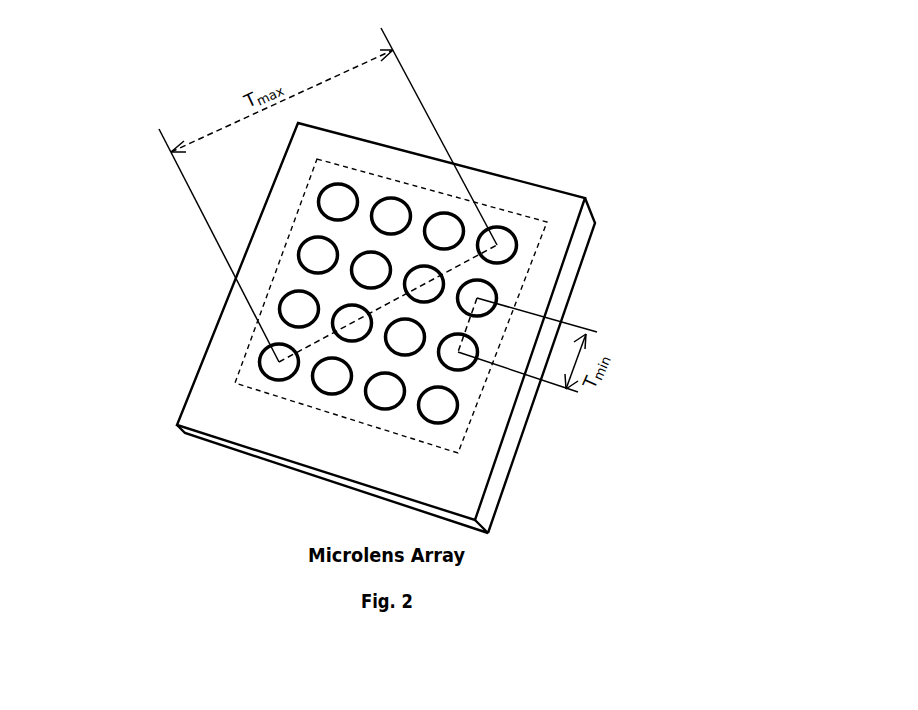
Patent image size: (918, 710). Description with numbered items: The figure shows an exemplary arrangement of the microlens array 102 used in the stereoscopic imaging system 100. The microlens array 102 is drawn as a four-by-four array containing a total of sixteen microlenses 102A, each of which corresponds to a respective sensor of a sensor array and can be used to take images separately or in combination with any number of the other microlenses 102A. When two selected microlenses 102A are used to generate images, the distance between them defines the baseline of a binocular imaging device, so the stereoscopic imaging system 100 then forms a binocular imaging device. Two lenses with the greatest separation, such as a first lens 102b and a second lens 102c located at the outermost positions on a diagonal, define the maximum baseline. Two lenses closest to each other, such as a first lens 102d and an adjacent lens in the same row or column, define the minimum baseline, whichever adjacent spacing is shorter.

The stereoscopic imaging system 100 is at (640, 32).
The microlens array 102 is at (207, 345).
The microlens 102A is at (364, 392).
The first lens 102b is at (260, 366).
The second lens 102c is at (515, 234).
The first lens 102d is at (468, 360).